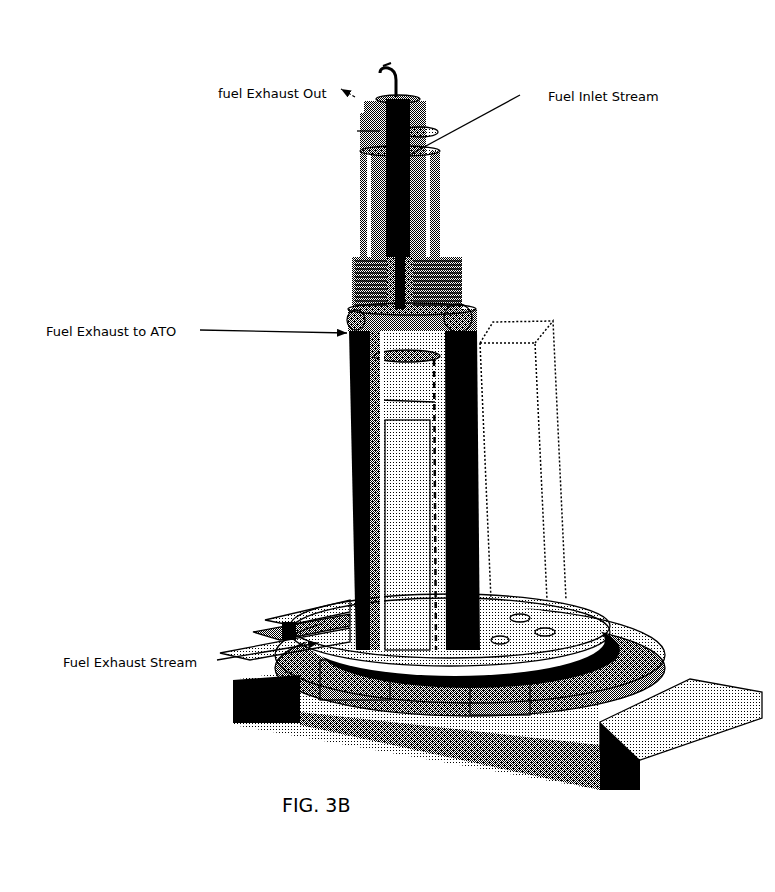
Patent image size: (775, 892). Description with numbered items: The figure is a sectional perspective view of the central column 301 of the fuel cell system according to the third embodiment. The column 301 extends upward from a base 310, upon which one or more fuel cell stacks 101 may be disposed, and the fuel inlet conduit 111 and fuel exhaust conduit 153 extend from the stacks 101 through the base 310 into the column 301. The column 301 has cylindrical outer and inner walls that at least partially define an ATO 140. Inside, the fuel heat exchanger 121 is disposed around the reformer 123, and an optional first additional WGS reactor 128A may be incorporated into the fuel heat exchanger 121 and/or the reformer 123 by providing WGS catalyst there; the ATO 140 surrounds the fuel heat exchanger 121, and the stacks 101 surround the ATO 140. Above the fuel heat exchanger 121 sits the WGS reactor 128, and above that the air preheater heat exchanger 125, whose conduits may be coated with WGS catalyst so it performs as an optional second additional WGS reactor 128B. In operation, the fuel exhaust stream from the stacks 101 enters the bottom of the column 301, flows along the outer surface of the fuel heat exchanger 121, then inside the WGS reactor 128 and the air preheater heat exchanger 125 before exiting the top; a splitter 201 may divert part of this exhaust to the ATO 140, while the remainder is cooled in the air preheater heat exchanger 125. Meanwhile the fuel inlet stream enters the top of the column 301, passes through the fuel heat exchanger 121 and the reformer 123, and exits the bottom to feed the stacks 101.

The central column 301 is at (514, 226).
The base 310 is at (612, 645).
The fuel inlet conduit 111 is at (575, 640).
The fuel exhaust conduit 153 is at (298, 623).
The ATO 140 is at (347, 373).
The reformer 123 is at (402, 565).
The fuel heat exchanger 121 is at (263, 490).
The first additional WGS reactor 128A is at (366, 500).
The splitter 201 is at (350, 314).
The WGS reactor 128 is at (432, 305).
The air preheater heat exchanger 125 is at (309, 160).
The second additional WGS reactor 128B is at (358, 210).
The fuel cell stacks 101 is at (562, 470).